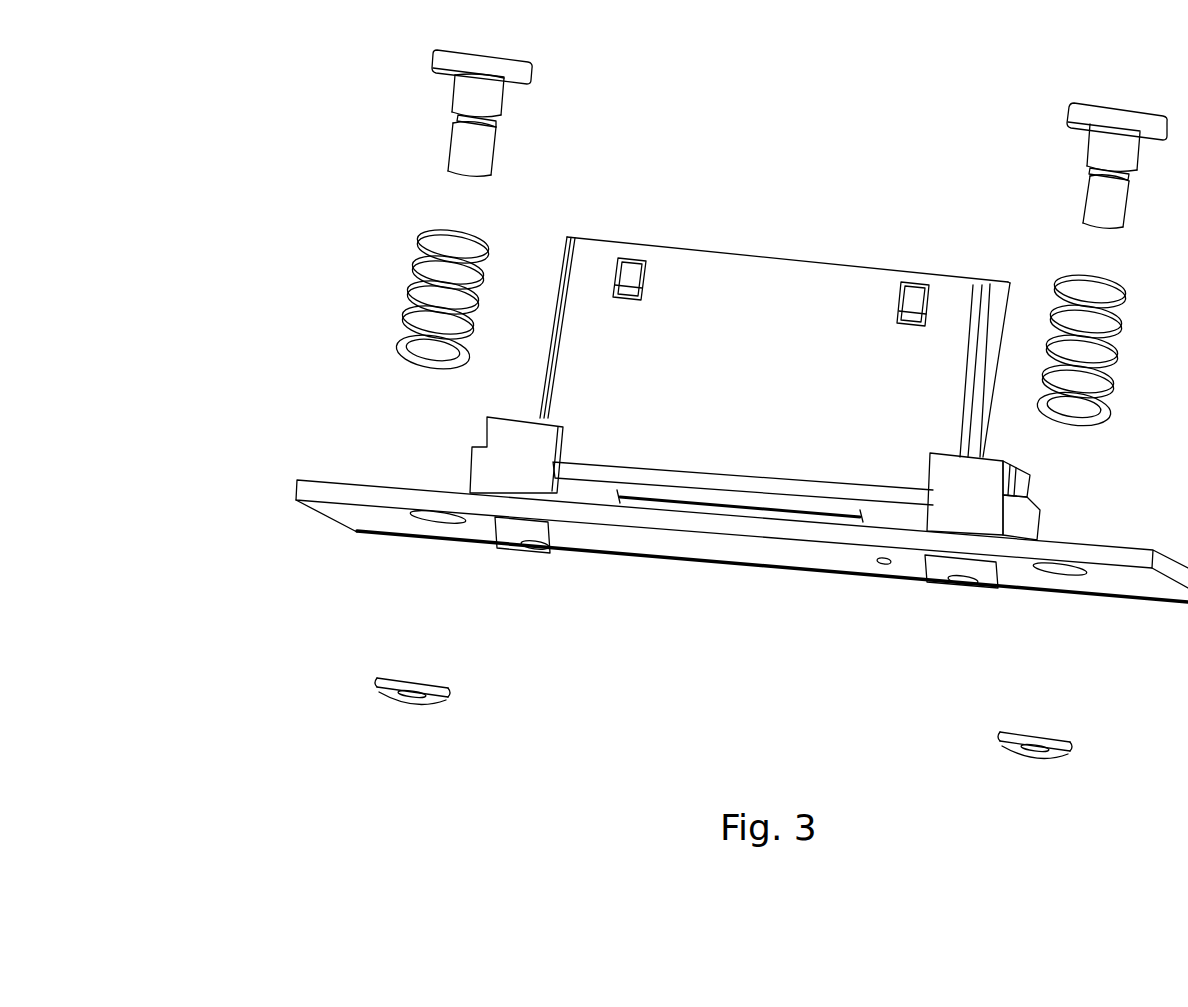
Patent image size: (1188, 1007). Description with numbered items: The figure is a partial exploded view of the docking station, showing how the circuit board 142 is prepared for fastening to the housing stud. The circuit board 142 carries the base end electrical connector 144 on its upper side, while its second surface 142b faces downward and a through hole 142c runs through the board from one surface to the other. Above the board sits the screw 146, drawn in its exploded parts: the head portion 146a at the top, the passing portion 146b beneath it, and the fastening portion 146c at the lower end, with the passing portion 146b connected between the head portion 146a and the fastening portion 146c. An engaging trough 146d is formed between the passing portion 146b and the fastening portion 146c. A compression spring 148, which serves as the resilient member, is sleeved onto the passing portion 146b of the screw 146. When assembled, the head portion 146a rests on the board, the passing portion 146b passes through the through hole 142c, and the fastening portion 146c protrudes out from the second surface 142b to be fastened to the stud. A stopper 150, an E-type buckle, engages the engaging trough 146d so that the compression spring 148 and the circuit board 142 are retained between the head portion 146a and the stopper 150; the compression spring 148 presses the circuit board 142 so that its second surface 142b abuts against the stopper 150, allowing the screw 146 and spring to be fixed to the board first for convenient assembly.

The circuit board 142 is at (297, 483).
The second surface 142b is at (707, 552).
The through hole 142c is at (404, 535).
The base end electrical connector 144 is at (778, 258).
The screw 146 is at (250, 32).
The head portion 146a is at (433, 60).
The passing portion 146b is at (453, 90).
The fastening portion 146c is at (450, 147).
The engaging trough 146d is at (515, 124).
The compression spring 148 is at (410, 300).
The stopper 150 is at (377, 683).